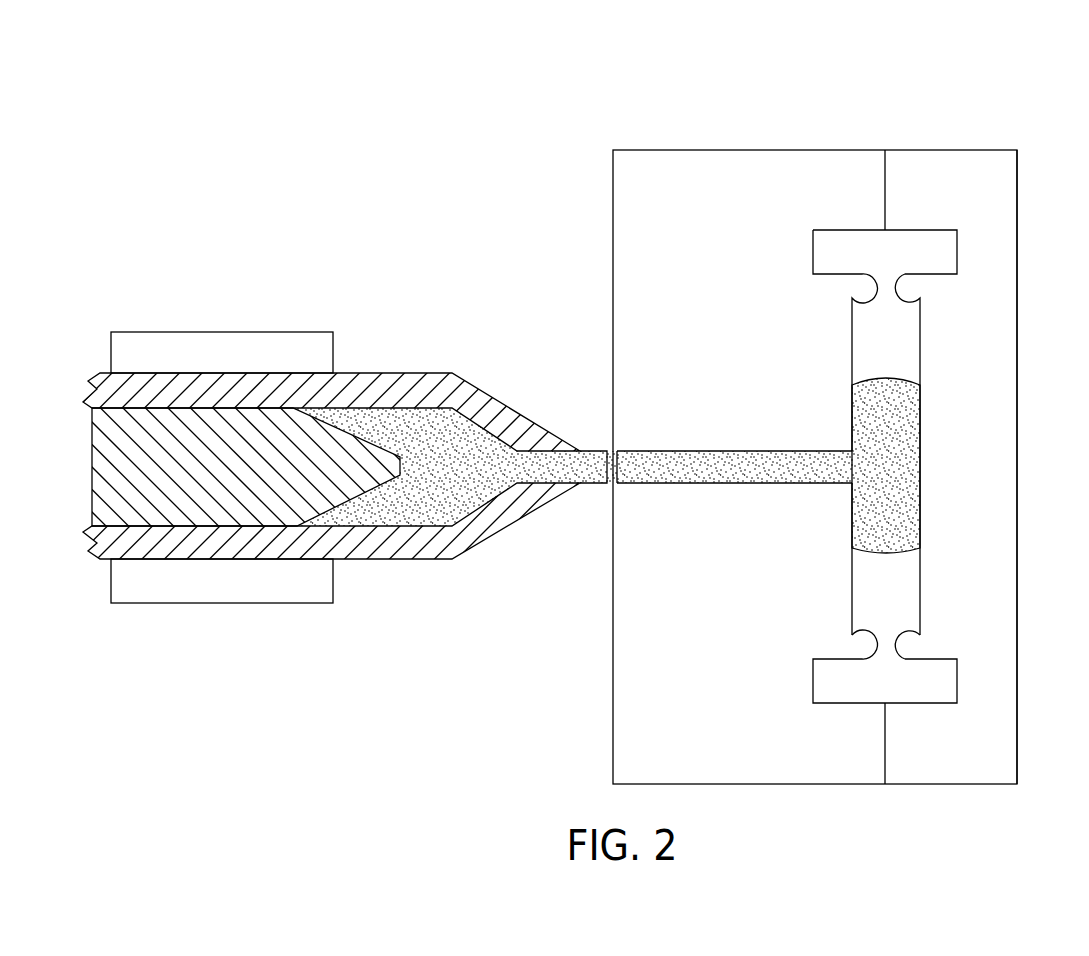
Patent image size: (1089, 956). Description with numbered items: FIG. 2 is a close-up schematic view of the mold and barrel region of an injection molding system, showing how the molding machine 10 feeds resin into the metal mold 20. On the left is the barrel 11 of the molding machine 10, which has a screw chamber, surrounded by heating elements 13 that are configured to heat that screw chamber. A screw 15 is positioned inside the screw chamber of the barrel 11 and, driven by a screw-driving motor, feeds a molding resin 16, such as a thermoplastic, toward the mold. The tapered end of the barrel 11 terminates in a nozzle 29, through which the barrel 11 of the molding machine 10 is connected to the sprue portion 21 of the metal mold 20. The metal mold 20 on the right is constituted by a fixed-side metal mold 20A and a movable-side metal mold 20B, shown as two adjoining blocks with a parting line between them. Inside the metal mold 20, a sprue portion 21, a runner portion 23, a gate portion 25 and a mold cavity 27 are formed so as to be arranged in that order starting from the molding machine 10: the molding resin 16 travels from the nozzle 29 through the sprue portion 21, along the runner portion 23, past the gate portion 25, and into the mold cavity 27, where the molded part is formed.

The molding machine 10 is at (83, 123).
The barrel 11 is at (403, 386).
The heating elements 13 is at (222, 332).
The screw 15 is at (101, 470).
The molding resin 16 is at (428, 496).
The nozzle 29 is at (603, 487).
The sprue portion 21 is at (710, 484).
The metal mold 20 is at (1007, 189).
The fixed-side metal mold 20A is at (738, 150).
The movable-side metal mold 20B is at (952, 150).
The runner portion 23 is at (893, 343).
The gate portion 25 is at (918, 647).
The mold cavity 27 is at (937, 683).